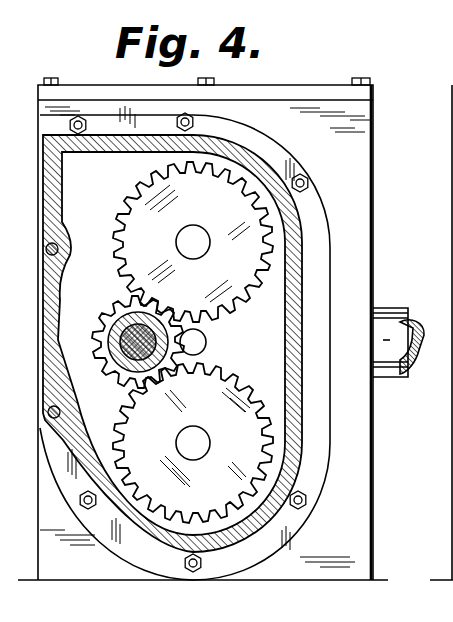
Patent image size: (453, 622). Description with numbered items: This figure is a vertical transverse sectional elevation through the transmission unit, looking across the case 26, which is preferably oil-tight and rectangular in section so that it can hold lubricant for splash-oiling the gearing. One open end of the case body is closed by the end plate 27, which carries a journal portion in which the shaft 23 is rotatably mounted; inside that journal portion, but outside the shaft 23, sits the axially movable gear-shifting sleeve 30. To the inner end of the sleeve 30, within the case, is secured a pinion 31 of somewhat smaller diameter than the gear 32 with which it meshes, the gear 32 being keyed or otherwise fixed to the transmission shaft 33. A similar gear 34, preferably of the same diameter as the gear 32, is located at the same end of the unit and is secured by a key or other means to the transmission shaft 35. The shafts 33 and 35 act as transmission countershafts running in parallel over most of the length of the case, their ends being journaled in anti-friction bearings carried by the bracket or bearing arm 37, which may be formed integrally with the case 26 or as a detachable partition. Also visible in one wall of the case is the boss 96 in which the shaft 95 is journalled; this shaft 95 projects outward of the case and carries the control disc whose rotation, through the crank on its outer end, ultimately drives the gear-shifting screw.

The case 26 is at (322, 85).
The bracket or bearing arm 37 is at (330, 155).
The end plate 27 is at (302, 436).
The gear 34 is at (178, 242).
The transmission shaft 35 is at (197, 236).
The gear 32 is at (193, 443).
The transmission shaft 33 is at (197, 443).
The gear-shifting sleeve 30 is at (122, 341).
The pinion 31 is at (120, 313).
The shaft 23 is at (115, 362).
The boss 96 is at (395, 318).
The shaft 95 is at (416, 365).